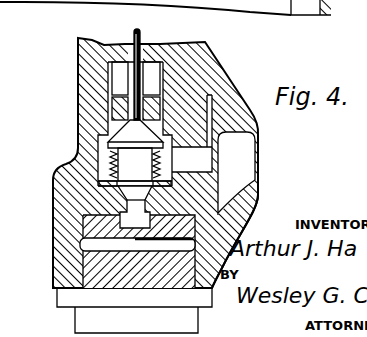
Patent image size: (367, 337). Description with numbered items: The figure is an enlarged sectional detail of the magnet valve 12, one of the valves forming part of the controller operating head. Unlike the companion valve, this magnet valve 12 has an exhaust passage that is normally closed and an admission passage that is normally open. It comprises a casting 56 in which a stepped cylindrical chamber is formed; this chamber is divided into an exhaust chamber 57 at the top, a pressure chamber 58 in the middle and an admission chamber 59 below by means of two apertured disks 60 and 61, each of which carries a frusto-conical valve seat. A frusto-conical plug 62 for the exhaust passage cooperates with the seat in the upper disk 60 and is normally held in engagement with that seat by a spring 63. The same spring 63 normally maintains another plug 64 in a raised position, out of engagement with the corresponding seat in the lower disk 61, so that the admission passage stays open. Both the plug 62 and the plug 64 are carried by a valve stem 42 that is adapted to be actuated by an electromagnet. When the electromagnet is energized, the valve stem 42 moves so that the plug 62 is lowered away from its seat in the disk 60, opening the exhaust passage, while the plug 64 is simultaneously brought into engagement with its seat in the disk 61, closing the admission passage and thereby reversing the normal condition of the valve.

The magnet valve 12 is at (257, 196).
The valve stem 42 is at (141, 33).
The casting 56 is at (205, 72).
The exhaust chamber 57 is at (118, 70).
The pressure chamber 58 is at (219, 172).
The admission chamber 59 is at (85, 241).
The apertured disk 60 is at (112, 115).
The apertured disk 61 is at (96, 197).
The frusto-conical plug 62 is at (125, 136).
The spring 63 is at (159, 170).
The plug 64 is at (163, 187).